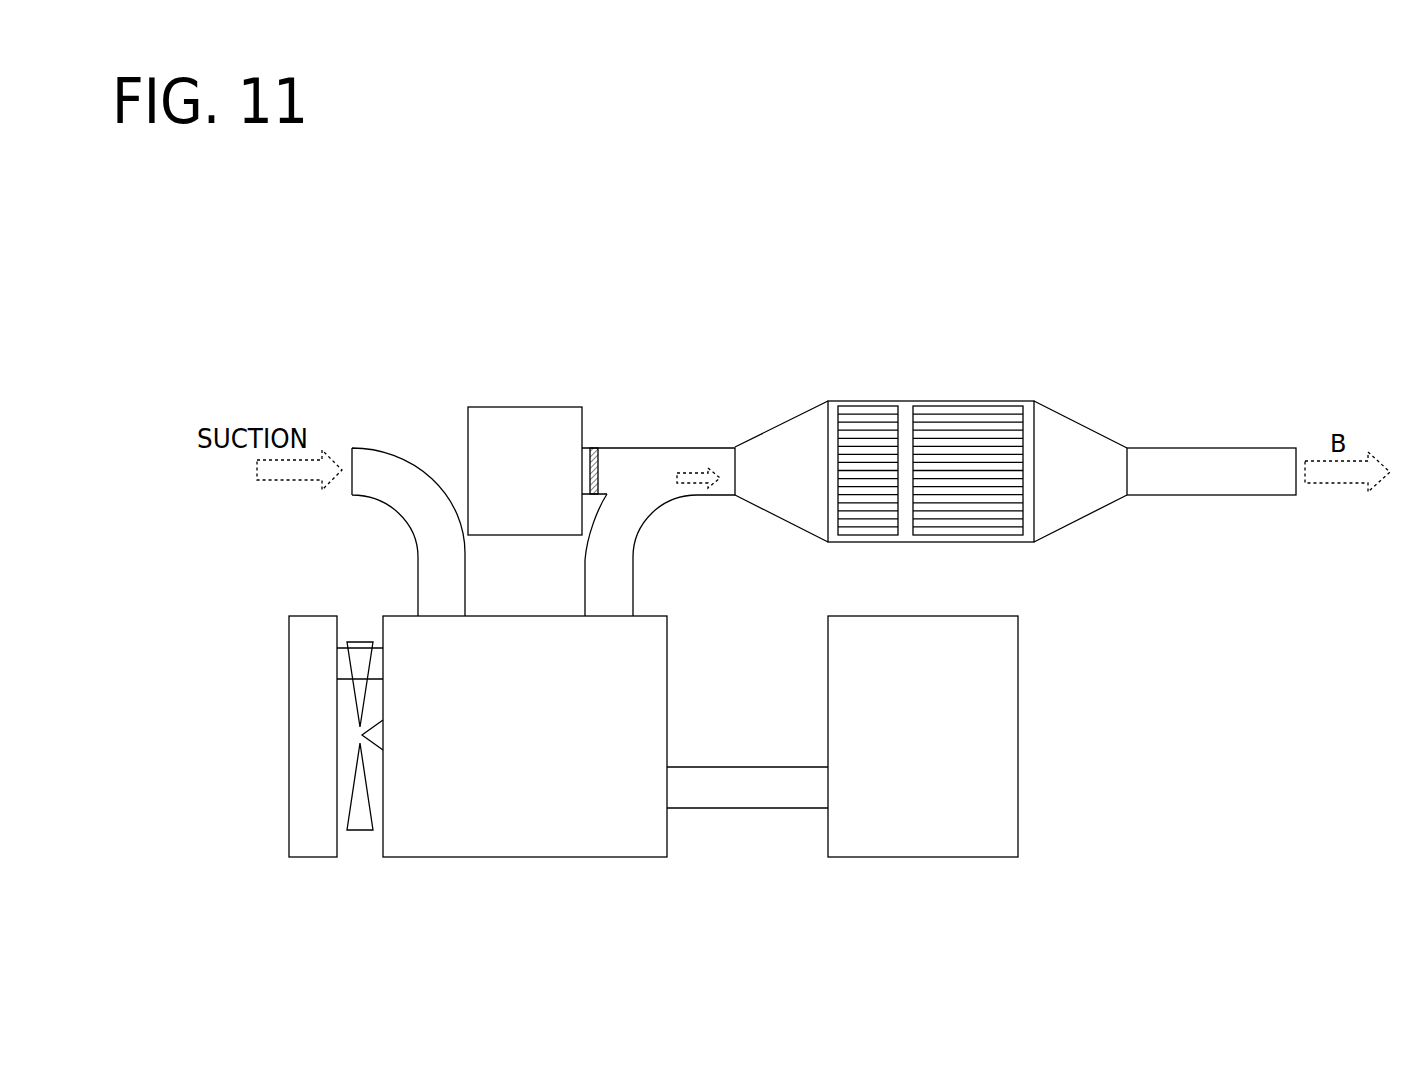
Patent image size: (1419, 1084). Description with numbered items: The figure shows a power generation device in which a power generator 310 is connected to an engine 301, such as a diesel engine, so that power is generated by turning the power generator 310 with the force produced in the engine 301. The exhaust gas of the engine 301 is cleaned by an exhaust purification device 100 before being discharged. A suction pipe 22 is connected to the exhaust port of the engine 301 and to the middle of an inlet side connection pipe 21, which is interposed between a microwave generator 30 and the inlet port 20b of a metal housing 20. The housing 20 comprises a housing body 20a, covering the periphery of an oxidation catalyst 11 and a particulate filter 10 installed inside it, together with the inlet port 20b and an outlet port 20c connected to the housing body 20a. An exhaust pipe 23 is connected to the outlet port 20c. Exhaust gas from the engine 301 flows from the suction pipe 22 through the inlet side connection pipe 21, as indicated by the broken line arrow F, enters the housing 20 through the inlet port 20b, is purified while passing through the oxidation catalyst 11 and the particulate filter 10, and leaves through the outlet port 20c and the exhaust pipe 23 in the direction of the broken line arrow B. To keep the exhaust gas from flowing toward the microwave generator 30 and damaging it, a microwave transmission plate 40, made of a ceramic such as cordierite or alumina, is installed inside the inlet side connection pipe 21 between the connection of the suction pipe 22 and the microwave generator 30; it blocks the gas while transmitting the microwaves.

The exhaust purification device 100 is at (1100, 308).
The housing 20 is at (931, 409).
The housing body 20a is at (930, 401).
The inlet port 20b is at (780, 424).
The outlet port 20c is at (1080, 433).
The inlet side connection pipe 21 is at (707, 447).
The suction pipe 22 is at (633, 557).
The exhaust pipe 23 is at (1210, 448).
The particulate filter 10 is at (966, 535).
The oxidation catalyst 11 is at (866, 535).
The microwave generator 30 is at (524, 407).
The microwave transmission plate 40 is at (594, 447).
The engine 301 is at (524, 857).
The power generator 310 is at (921, 857).